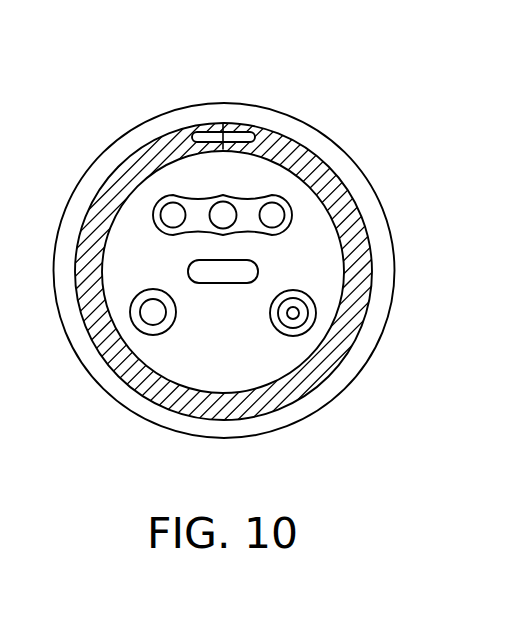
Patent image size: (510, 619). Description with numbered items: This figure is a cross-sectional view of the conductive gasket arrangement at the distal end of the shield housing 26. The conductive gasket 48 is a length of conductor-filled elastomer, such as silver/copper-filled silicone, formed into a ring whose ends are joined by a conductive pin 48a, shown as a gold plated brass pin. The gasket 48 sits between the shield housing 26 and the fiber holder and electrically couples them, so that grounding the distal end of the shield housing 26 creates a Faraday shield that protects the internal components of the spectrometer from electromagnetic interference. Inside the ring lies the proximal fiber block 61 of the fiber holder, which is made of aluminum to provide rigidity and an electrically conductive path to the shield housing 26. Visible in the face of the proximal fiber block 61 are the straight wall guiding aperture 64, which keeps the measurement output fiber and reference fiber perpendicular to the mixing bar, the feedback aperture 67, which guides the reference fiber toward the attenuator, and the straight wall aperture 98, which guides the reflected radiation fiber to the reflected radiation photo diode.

The shield housing 26 is at (243, 102).
The conductive gasket 48 is at (332, 178).
The conductive pin 48a is at (246, 133).
The proximal fiber block 61 is at (328, 263).
The straight wall guiding aperture 64 is at (217, 208).
The feedback aperture 67 is at (153, 312).
The straight wall aperture 98 is at (293, 313).